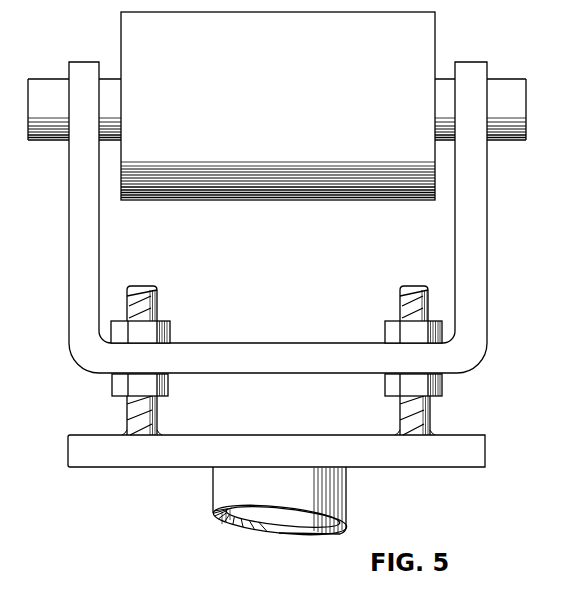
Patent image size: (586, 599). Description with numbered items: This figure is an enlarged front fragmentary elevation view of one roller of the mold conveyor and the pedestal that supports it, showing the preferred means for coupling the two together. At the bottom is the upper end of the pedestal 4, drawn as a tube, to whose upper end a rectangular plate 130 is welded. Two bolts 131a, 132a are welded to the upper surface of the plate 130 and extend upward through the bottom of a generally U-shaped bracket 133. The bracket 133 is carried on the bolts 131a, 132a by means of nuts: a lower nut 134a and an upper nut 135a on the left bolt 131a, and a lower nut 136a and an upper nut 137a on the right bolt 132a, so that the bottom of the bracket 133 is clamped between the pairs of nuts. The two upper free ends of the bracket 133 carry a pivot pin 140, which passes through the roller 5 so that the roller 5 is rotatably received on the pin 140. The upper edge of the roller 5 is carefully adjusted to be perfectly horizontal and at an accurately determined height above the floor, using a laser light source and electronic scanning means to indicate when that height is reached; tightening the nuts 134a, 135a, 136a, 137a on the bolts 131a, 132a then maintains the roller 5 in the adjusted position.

The pivot pin 140 is at (44, 79).
The roller 5 is at (295, 81).
The U-shaped bracket 133 is at (69, 230).
The bolt 131a is at (148, 410).
The bolt 132a is at (426, 412).
The nut 134a is at (169, 384).
The nut 135a is at (170, 326).
The nut 136a is at (386, 384).
The nut 137a is at (388, 327).
The rectangular plate 130 is at (431, 467).
The pedestal 4 is at (346, 495).